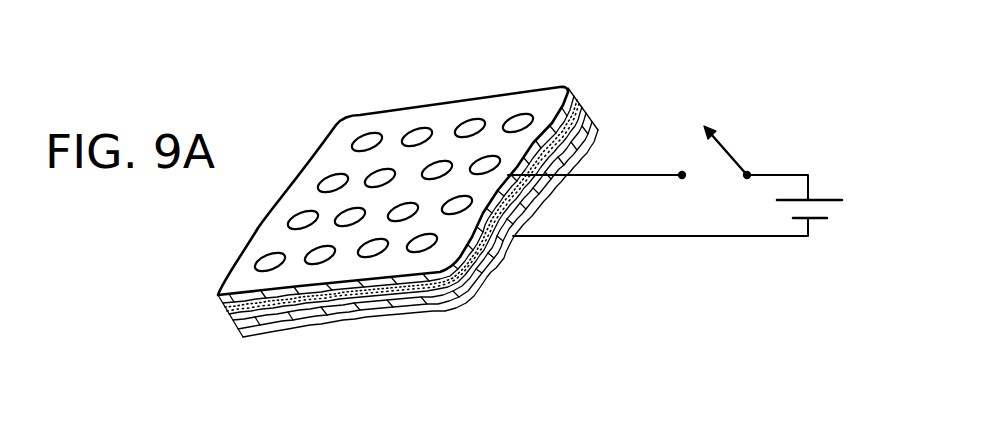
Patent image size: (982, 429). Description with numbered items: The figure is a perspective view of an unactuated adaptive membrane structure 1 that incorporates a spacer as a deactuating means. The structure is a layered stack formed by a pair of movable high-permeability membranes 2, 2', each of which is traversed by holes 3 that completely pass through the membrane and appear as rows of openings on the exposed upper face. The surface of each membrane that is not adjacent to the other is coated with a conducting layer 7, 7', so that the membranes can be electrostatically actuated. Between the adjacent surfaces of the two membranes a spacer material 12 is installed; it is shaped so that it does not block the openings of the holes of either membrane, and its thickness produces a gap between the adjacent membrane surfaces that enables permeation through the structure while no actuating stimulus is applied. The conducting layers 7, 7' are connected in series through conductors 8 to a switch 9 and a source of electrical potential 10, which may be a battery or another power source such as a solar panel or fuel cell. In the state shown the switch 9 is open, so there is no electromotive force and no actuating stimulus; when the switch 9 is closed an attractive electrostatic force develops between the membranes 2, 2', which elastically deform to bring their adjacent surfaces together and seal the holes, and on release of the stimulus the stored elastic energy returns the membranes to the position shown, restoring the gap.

The piezoelectric device 1 is at (306, 72).
The membrane 2 is at (433, 189).
The membrane 2' is at (442, 205).
The holes 3 is at (524, 120).
The conducting layer 7 is at (420, 177).
The conducting layer 7' is at (420, 233).
The conductor 8 is at (633, 175).
The switch 9 is at (721, 137).
The source of electrical potential 10 is at (833, 200).
The spacer material 12 is at (237, 319).